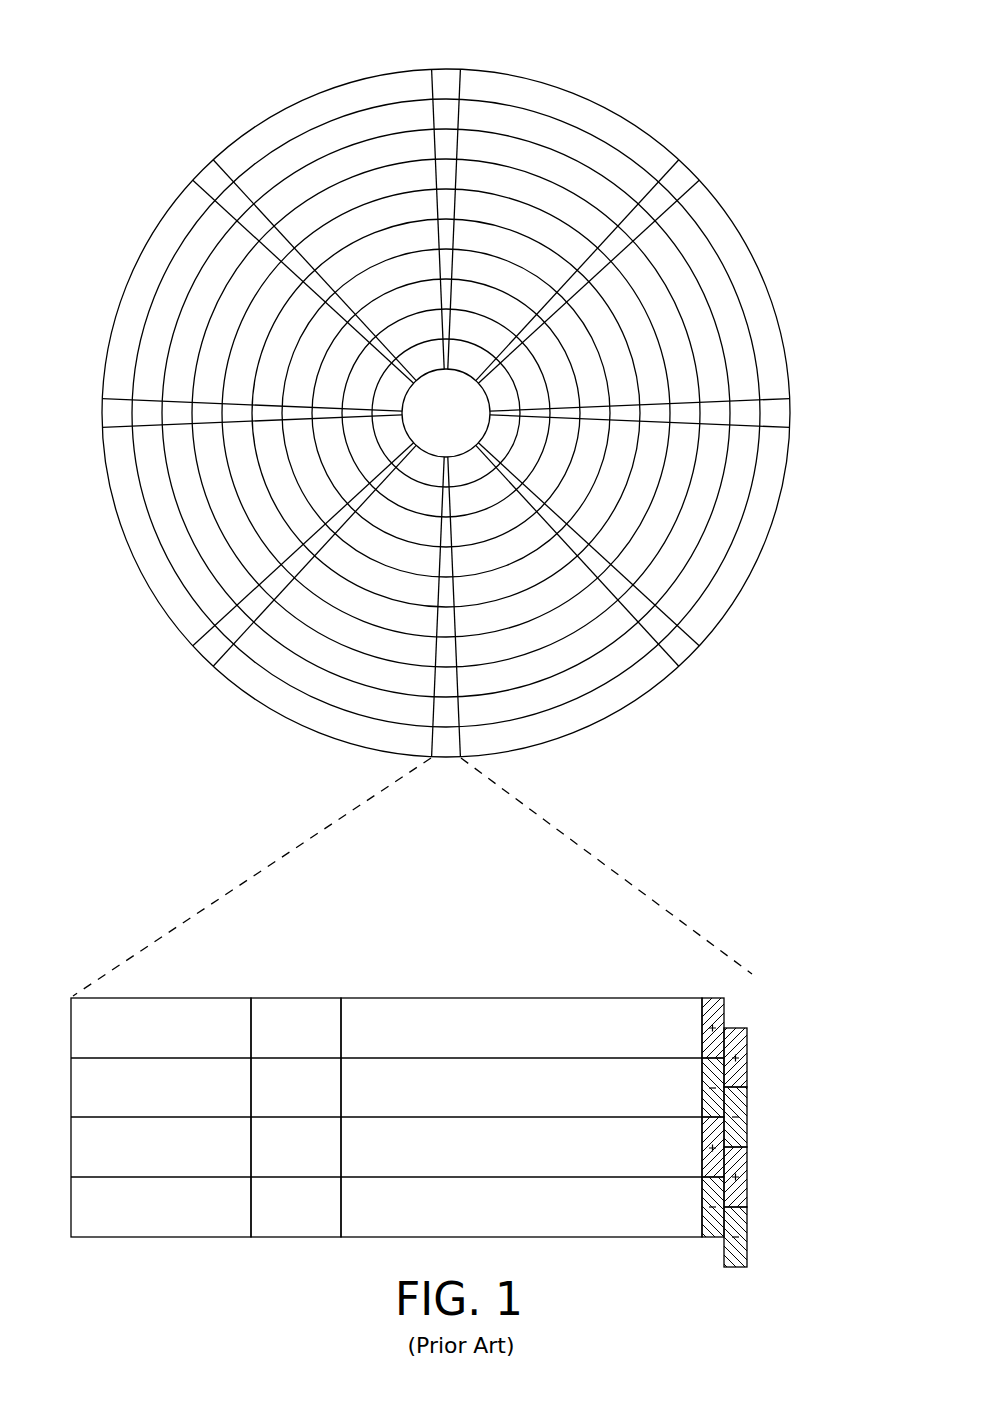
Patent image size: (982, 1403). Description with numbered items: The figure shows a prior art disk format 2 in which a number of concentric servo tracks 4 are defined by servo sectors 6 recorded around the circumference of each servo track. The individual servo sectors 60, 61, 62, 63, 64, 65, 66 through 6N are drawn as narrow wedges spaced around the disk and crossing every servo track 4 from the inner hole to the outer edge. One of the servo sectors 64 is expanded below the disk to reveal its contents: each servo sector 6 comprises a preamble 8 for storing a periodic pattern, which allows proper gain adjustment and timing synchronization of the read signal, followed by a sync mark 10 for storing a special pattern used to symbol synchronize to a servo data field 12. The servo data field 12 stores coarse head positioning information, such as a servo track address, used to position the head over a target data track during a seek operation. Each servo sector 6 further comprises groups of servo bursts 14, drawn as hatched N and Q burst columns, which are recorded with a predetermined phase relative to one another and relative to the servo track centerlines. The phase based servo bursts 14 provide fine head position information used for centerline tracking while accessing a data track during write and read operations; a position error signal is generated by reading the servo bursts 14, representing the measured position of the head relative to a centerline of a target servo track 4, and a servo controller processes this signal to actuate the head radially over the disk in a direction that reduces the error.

The disk format 2 is at (186, 68).
The servo track 4 is at (565, 135).
The servo sector 6 is at (447, 424).
The servo sector 60 is at (447, 78).
The servo sector 61 is at (683, 176).
The servo sector 62 is at (793, 413).
The servo sector 63 is at (680, 651).
The servo sector 64 is at (291, 831).
The servo sector 65 is at (207, 652).
The servo sector 66 is at (105, 413).
The servo sector 6N is at (209, 174).
The preamble 8 is at (168, 998).
The sync mark 10 is at (300, 998).
The servo data field 12 is at (505, 998).
The servo bursts 14 is at (750, 992).